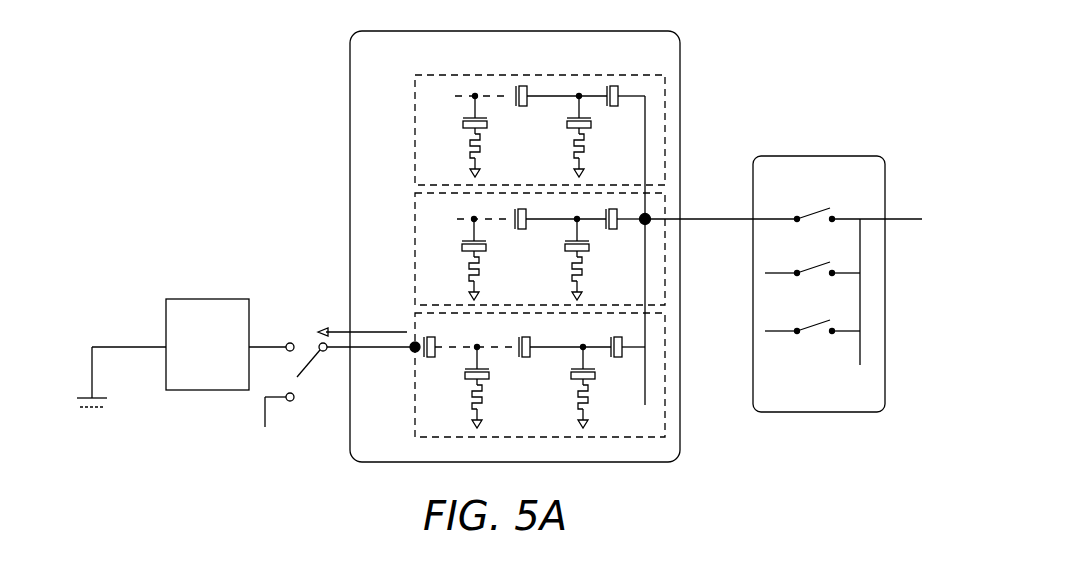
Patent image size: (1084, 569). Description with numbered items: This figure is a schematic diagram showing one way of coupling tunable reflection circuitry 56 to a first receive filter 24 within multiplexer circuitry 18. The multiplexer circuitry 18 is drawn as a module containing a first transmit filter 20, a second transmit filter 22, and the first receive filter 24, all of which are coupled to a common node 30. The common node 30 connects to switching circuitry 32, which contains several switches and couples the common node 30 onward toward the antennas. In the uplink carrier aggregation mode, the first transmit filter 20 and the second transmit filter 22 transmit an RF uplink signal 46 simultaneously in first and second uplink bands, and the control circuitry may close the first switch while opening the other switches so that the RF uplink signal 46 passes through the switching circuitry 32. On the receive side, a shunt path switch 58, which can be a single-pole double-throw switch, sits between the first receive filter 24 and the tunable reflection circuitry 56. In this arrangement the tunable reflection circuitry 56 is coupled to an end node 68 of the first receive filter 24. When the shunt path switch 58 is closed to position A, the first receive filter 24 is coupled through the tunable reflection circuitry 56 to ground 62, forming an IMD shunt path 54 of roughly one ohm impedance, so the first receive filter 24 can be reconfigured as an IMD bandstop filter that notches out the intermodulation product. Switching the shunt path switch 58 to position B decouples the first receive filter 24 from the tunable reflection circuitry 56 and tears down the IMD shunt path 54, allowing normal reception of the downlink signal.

The multiplexer circuitry 18 is at (407, 68).
The first transmit filter 20 is at (665, 84).
The second transmit filter 22 is at (665, 272).
The first receive filter 24 is at (665, 412).
The common node 30 is at (649, 215).
The switching circuitry 32 is at (845, 156).
The RF uplink signal 46 is at (706, 219).
The IMD shunt path 54 is at (376, 332).
The tunable reflection circuitry 56 is at (221, 355).
The shunt path switch 58 is at (310, 366).
The ground 62 is at (92, 414).
The end node 68 is at (412, 350).